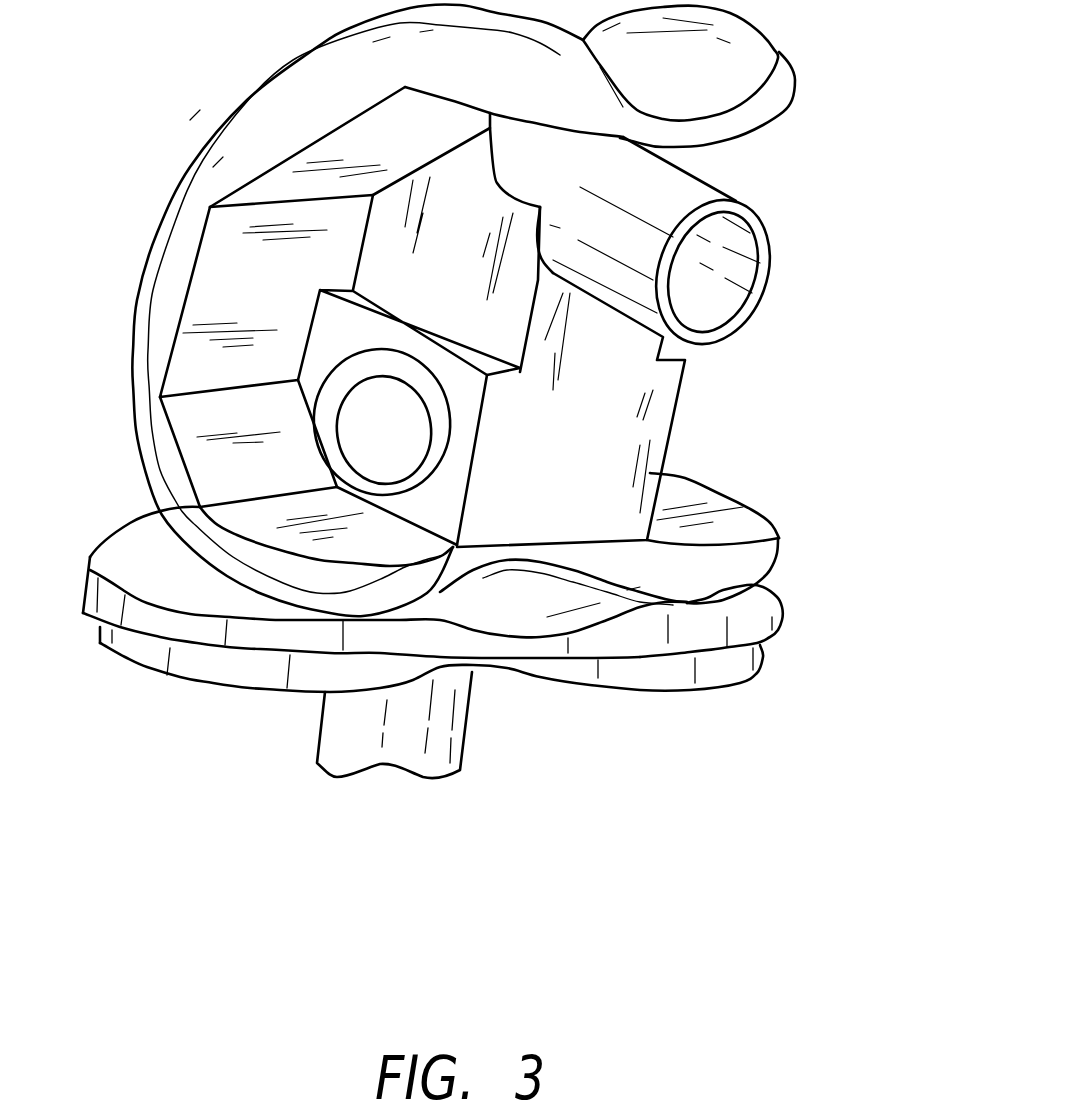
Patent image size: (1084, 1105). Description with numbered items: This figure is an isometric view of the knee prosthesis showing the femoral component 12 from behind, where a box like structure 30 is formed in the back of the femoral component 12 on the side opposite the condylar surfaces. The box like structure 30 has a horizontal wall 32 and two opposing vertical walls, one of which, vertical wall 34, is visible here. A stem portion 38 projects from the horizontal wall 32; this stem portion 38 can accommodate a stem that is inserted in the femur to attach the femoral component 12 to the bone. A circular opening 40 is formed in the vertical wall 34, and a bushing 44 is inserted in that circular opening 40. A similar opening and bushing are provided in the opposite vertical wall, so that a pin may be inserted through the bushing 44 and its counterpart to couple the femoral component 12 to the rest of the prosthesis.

The femoral component 12 is at (748, 63).
The box like structure 30 is at (793, 395).
The horizontal wall 32 is at (600, 447).
The vertical wall 34 is at (407, 270).
The stem portion 38 is at (768, 233).
The circular opening 40 is at (335, 437).
The bushing 44 is at (427, 460).